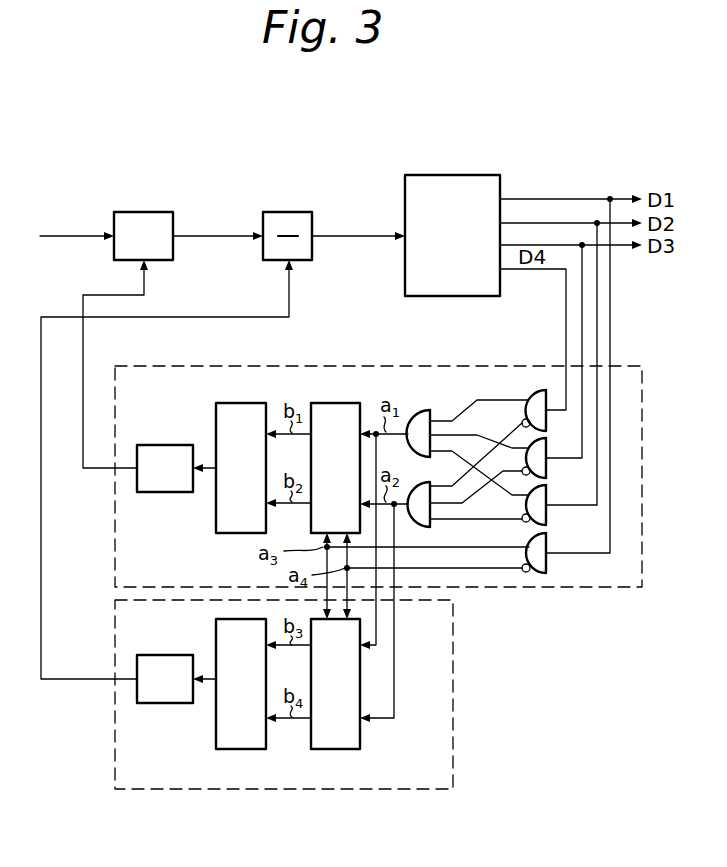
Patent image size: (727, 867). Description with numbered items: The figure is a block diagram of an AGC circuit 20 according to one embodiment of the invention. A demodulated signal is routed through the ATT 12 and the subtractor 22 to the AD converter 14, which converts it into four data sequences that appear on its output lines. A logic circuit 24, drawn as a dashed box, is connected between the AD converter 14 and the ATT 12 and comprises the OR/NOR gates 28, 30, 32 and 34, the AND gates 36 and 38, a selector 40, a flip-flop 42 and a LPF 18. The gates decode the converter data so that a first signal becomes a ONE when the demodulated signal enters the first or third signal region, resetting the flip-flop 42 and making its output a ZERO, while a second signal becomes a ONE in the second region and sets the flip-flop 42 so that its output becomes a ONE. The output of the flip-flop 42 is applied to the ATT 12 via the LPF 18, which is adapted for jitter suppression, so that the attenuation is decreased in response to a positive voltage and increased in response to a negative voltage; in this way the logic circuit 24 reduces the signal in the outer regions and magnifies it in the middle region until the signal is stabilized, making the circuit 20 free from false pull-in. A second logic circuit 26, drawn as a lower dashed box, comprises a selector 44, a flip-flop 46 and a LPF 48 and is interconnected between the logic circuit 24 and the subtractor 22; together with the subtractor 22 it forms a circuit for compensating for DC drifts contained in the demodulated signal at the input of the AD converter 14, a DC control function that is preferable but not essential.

The ATT 12 is at (147, 211).
The subtractor 22 is at (287, 211).
The AD converter 14 is at (461, 175).
The AGC circuit 20 is at (582, 150).
The logic circuit 24 is at (505, 365).
The second logic circuit 26 is at (427, 790).
The LPF 18 is at (161, 445).
The LPF 48 is at (162, 655).
The flip-flop 42 is at (241, 403).
The flip-flop 46 is at (243, 750).
The selector 40 is at (336, 403).
The selector 44 is at (338, 750).
The AND gate 36 is at (424, 409).
The AND gate 38 is at (426, 470).
The OR/NOR gate 28 is at (531, 391).
The OR/NOR gate 30 is at (560, 450).
The OR/NOR gate 32 is at (565, 500).
The OR/NOR gate 34 is at (570, 546).